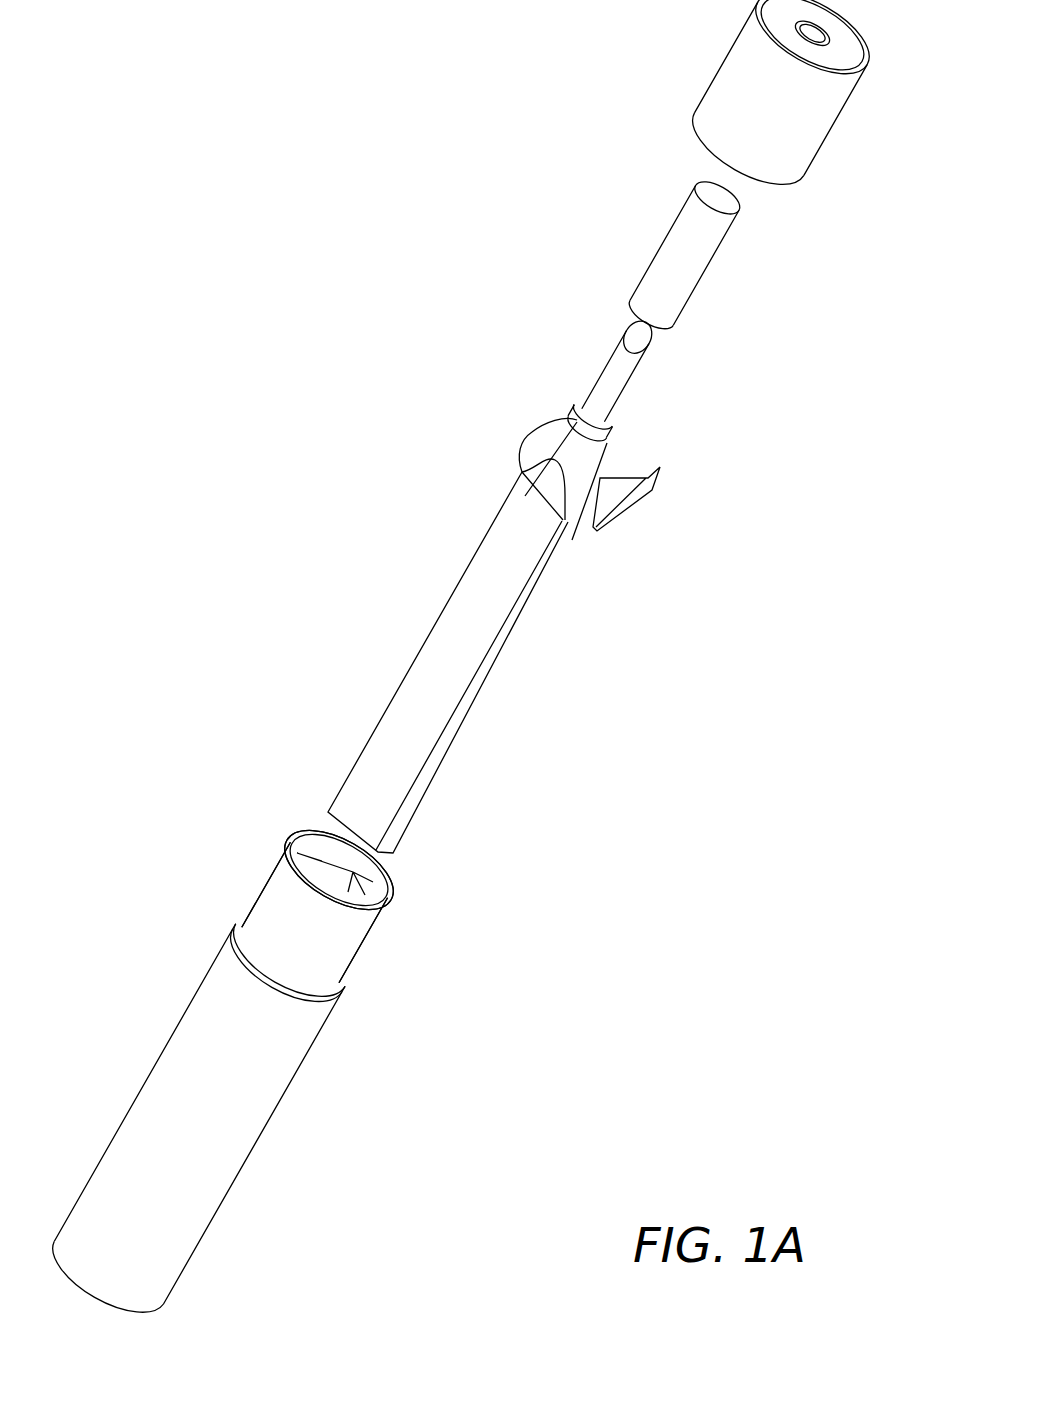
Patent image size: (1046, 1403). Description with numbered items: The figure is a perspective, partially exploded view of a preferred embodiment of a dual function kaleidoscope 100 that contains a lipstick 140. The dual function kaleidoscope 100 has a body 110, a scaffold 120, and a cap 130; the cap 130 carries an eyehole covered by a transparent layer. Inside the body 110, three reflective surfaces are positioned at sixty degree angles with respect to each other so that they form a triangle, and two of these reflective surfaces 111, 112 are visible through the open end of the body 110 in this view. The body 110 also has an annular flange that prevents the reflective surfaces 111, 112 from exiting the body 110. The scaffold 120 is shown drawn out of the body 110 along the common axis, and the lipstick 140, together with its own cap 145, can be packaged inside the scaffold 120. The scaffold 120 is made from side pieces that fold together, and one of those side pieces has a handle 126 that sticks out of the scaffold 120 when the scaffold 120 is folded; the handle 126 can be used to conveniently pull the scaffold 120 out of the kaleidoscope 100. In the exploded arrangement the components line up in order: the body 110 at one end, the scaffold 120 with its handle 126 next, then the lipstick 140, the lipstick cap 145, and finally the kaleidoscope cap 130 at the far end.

The dual function kaleidoscope 100 is at (260, 132).
The body 110 is at (270, 1118).
The reflective surface 111 is at (395, 882).
The reflective surface 112 is at (300, 835).
The scaffold 120 is at (452, 590).
The handle 126 is at (546, 478).
The cap 130 is at (722, 56).
The lipstick 140 is at (602, 458).
The cap 145 is at (672, 222).